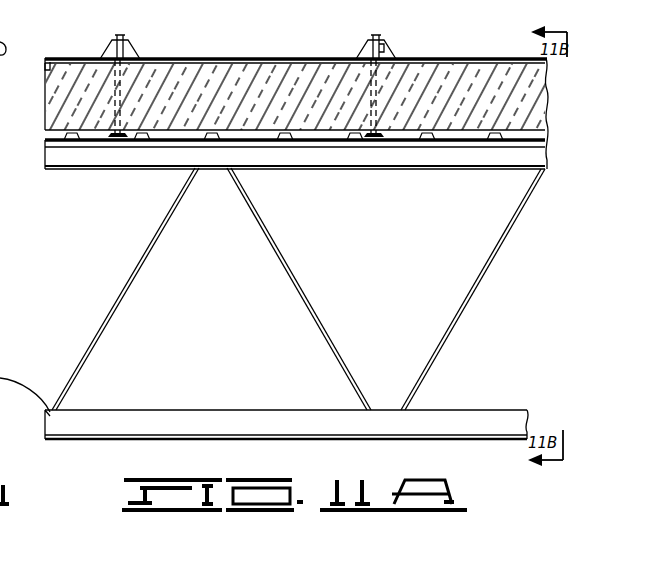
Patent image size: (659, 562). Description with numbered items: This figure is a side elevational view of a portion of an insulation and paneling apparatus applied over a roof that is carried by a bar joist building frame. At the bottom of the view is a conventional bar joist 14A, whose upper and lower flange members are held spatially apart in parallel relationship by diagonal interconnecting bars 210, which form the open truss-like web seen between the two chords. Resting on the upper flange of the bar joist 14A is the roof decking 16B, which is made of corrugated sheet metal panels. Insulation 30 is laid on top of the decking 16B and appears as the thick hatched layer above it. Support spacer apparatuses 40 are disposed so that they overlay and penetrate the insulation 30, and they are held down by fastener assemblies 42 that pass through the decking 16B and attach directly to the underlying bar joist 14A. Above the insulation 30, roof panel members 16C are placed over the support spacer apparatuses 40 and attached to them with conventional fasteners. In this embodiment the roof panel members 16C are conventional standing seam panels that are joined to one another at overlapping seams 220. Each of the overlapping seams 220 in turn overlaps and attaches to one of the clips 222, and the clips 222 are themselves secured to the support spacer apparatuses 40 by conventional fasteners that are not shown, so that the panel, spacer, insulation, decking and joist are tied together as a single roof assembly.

The bar joist 14A is at (128, 274).
The roof decking 16B is at (101, 136).
The roof panel members 16C is at (109, 46).
The insulation 30 is at (286, 86).
The support spacer apparatuses 40 is at (216, 57).
The fastener assemblies 42 is at (125, 140).
The interconnecting bars 210 is at (108, 314).
The overlapping seams 220 is at (129, 35).
The clips 222 is at (125, 55).